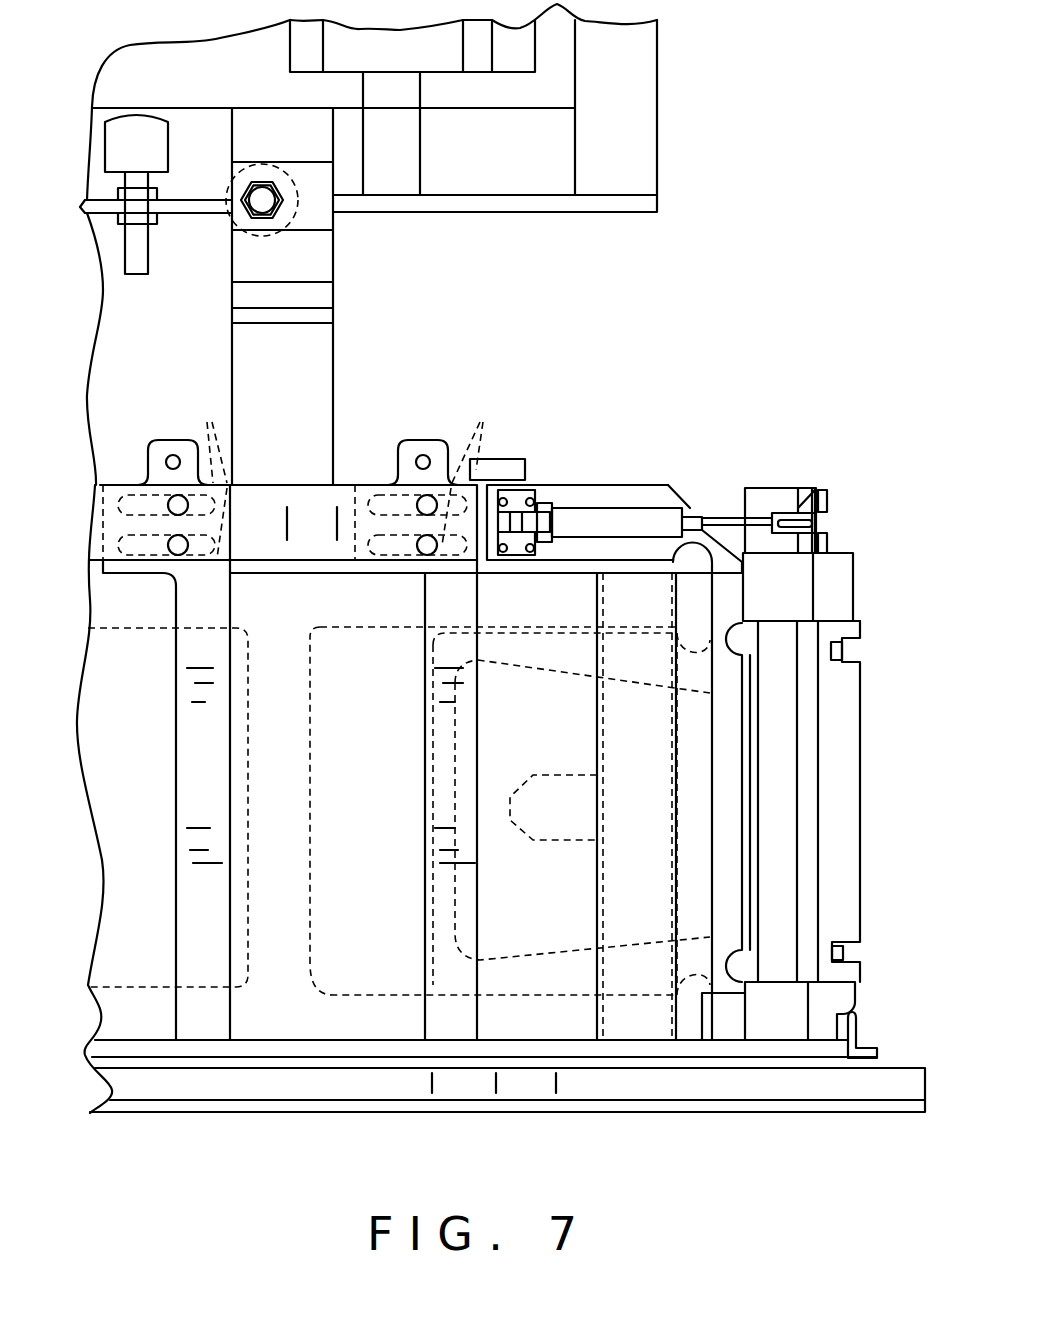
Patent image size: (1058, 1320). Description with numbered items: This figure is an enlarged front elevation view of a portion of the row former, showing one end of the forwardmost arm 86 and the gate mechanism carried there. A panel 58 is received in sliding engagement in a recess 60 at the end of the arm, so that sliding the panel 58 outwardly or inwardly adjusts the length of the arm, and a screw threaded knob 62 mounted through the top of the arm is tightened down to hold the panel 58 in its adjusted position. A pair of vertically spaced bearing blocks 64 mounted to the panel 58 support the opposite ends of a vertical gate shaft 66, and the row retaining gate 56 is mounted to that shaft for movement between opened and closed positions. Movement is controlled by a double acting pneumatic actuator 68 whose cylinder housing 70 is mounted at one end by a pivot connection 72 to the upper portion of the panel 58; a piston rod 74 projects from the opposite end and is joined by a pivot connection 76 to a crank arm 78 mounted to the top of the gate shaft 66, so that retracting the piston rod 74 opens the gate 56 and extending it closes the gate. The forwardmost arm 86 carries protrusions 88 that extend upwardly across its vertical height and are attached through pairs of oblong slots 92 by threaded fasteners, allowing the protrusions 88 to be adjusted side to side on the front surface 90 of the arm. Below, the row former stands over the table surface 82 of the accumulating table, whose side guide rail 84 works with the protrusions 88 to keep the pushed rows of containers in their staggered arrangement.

The row retaining gate 56 is at (845, 852).
The panel 58 is at (684, 500).
The recess 60 is at (310, 915).
The screw threaded knob 62 is at (500, 467).
The bearing block 64 is at (803, 587).
The gate shaft 66 is at (790, 487).
The double acting pneumatic actuator 68 is at (606, 510).
The cylinder housing 70 is at (577, 518).
The pivot connection 72 is at (530, 500).
The piston rod 74 is at (728, 515).
The pivot connection 76 is at (802, 507).
The crank arm 78 is at (831, 502).
The table surface 82 is at (160, 1057).
The guide rail 84 is at (858, 1050).
The forwardmost arm 86 is at (143, 686).
The protrusion 88 is at (433, 450).
The front surface 90 is at (165, 790).
The oblong slot 92 is at (348, 475).